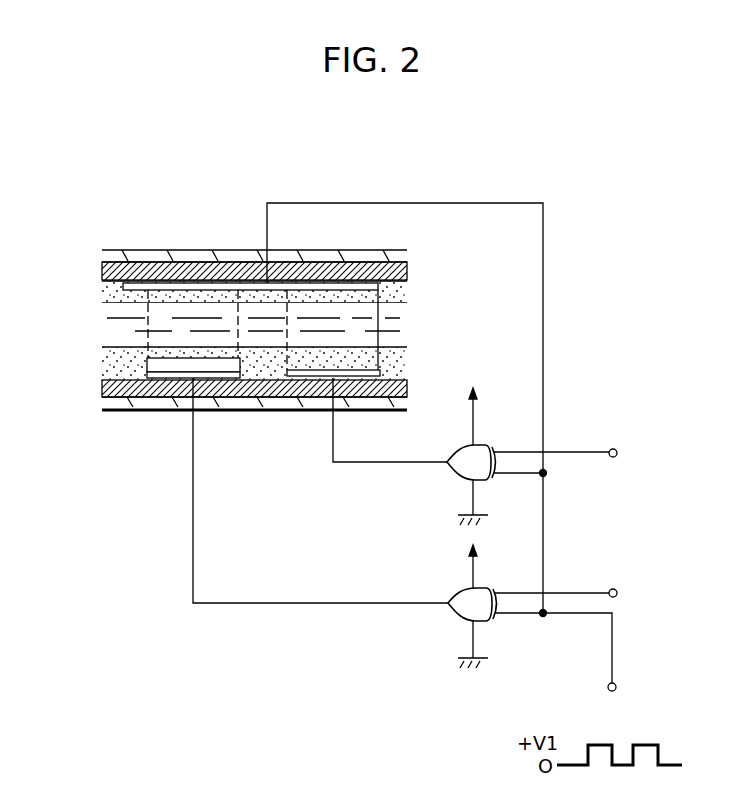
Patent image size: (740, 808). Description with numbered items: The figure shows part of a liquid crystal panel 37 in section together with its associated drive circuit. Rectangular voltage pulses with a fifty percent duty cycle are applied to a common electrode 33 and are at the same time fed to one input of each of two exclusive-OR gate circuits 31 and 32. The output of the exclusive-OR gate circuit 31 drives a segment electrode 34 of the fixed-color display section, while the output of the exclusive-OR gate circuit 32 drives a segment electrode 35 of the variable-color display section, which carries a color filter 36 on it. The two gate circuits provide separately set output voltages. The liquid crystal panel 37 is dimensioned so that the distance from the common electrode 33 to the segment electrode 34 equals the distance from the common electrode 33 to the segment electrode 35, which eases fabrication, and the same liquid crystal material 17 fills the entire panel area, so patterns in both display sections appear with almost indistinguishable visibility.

The liquid crystal material 17 is at (390, 328).
The common electrode 33 is at (365, 288).
The segment electrode 34 is at (370, 374).
The segment electrode 35 is at (147, 373).
The color filter 36 is at (147, 365).
The liquid crystal panel 37 is at (253, 411).
The exclusive-OR gate circuit 31 is at (452, 452).
The exclusive-OR gate circuit 32 is at (455, 592).